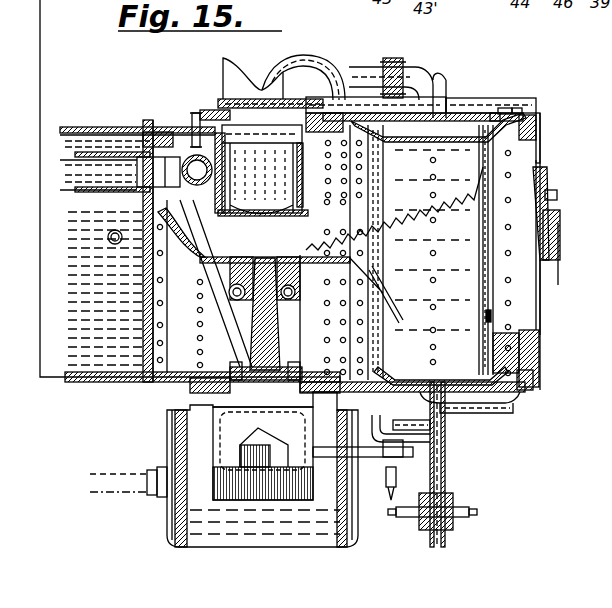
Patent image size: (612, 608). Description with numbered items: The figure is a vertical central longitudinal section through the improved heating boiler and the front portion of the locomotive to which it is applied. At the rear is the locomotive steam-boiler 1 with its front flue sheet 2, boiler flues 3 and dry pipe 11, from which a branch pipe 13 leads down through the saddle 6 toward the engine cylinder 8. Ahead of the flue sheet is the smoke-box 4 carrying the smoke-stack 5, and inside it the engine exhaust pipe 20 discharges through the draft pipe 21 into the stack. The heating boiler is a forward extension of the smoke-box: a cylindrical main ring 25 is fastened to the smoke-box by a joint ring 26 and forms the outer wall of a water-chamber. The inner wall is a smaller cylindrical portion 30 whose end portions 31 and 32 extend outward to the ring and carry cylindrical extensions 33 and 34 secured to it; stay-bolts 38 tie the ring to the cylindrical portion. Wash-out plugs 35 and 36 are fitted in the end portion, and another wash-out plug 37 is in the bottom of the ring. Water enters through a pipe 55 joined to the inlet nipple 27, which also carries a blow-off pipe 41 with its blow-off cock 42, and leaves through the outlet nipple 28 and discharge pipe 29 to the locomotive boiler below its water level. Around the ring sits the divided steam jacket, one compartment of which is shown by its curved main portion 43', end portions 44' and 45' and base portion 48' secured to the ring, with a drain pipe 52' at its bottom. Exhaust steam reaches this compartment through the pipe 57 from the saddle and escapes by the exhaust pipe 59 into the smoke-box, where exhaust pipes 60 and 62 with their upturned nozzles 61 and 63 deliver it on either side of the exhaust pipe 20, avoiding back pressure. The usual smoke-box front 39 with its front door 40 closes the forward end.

The steam-boiler 1 is at (95, 128).
The dry pipe 11 is at (110, 162).
The smoke-box 4 is at (192, 120).
The boiler flues 3 is at (115, 376).
The front flue sheet 2 is at (140, 376).
The smoke-stack 5 is at (222, 73).
The exhaust pipe 59 is at (282, 62).
The joint ring 26 is at (292, 68).
The end portion 44' is at (387, 69).
The discharge pipe 29 is at (385, 70).
The main portion 43' is at (384, 80).
The cylindrical extension 33 is at (352, 118).
The outlet nipple 28 is at (460, 138).
The cylindrical portion 30 is at (478, 110).
The base portion 48' is at (522, 74).
The end portion 45' is at (533, 86).
The main ring 25 is at (492, 113).
The end portion 32 is at (527, 117).
The cylindrical extension 34 is at (538, 115).
The smoke-box front 39 is at (545, 140).
The wash-out plug 35 is at (548, 194).
The front door 40 is at (556, 212).
The wash-out plug 36 is at (492, 317).
The stay-bolts 38 is at (432, 279).
The end portion 31 is at (397, 172).
The draft pipe 21 is at (262, 214).
The exhaust nozzle 61 is at (332, 252).
The nozzle 63 is at (234, 262).
The exhaust pipe 62 is at (230, 290).
The exhaust pipe 20 is at (281, 329).
The exhaust pipe 60 is at (340, 298).
The branch pipe 13 is at (190, 381).
The wash-out plug 37 is at (479, 414).
The engine cylinder 8 is at (255, 548).
The saddle 6 is at (235, 447).
The drain pipe 52' is at (356, 499).
The pipe 55 is at (378, 455).
The pipe 57 is at (396, 485).
The inlet nipple 27 is at (456, 413).
The blow-off pipe 41 is at (445, 472).
The blow-off cock 42 is at (455, 507).